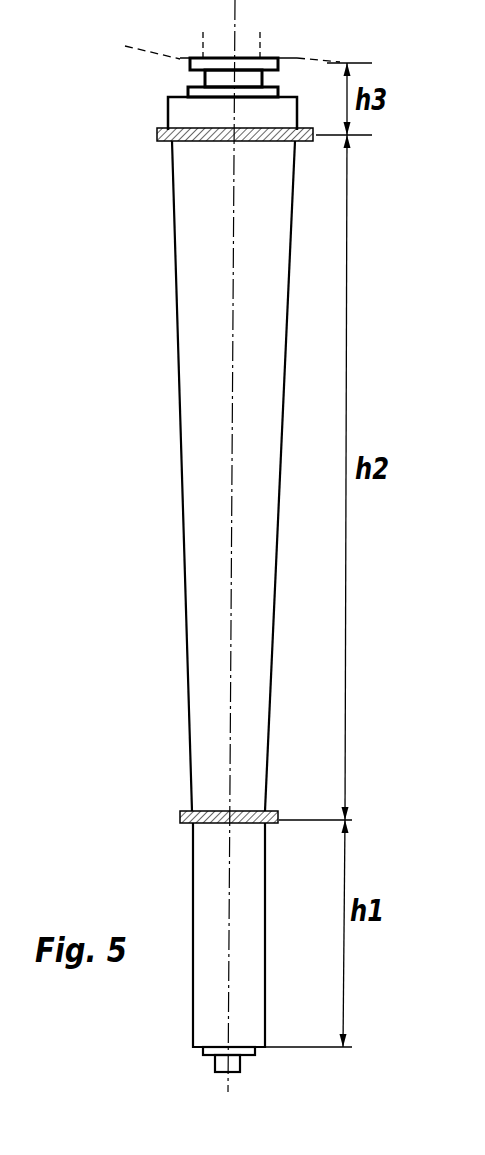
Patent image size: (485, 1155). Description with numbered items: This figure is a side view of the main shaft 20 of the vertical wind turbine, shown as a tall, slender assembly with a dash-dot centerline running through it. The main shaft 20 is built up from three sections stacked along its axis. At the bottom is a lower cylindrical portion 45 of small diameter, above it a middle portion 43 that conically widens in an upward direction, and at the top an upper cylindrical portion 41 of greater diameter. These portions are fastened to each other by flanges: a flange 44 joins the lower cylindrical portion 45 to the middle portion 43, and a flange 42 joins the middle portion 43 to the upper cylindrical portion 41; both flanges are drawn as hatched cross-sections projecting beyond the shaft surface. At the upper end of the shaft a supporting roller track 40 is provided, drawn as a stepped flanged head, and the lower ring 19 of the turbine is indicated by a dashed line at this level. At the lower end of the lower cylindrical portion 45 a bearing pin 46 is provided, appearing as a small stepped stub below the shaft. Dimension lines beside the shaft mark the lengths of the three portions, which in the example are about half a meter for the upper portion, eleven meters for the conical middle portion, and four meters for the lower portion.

The lower ring 19 is at (170, 32).
The main shaft 20 is at (168, 620).
The supporting roller track 40 is at (203, 78).
The upper portion (cylindrical) 41 is at (200, 110).
The flange 42 is at (170, 147).
The middle portion (conical) 43 is at (210, 425).
The flange 44 is at (180, 813).
The lower portion (cylindrical) 45 is at (213, 885).
The lower bearing pin 46 is at (200, 1060).